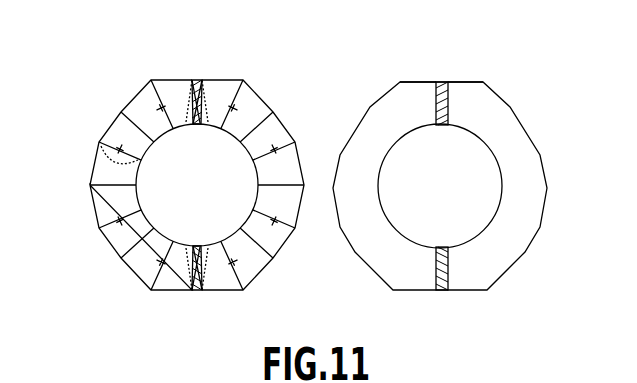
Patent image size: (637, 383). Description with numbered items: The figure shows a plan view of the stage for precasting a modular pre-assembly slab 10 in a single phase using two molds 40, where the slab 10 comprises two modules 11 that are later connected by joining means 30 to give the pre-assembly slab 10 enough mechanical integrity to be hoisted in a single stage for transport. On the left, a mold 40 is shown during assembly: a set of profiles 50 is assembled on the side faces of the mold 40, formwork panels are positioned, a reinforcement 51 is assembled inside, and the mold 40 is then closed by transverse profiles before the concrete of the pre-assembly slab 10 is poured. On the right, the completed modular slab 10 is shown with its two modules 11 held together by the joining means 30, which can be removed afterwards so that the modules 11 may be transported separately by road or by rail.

The pre-assembly slab 10 is at (538, 91).
The module 11 is at (403, 90).
The joining means 30 is at (441, 80).
The mold 40 is at (206, 293).
The profiles 50 is at (178, 80).
The reinforcement 51 is at (97, 157).